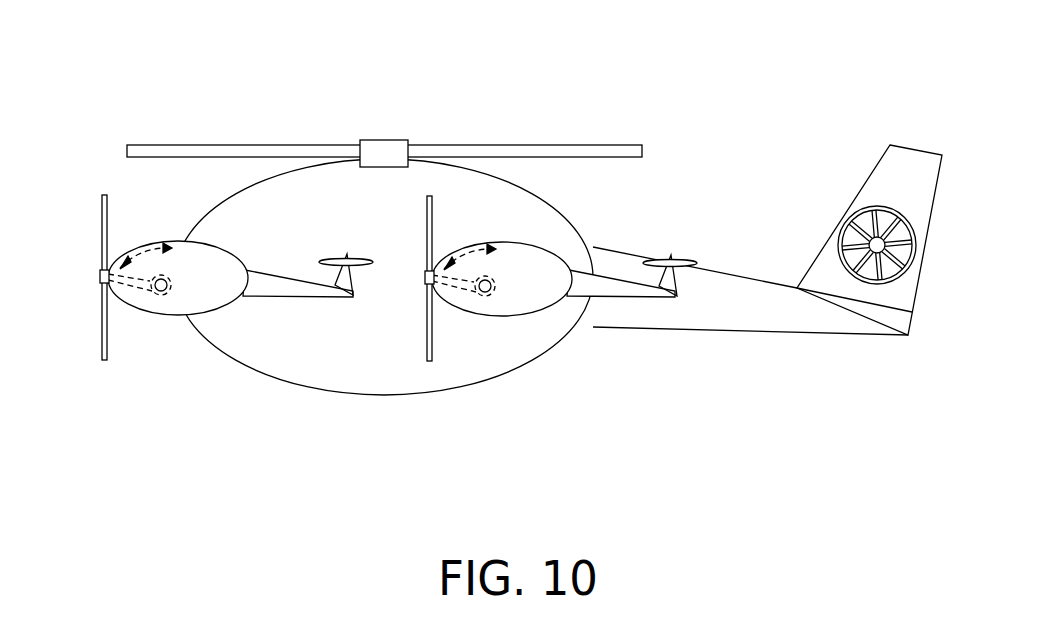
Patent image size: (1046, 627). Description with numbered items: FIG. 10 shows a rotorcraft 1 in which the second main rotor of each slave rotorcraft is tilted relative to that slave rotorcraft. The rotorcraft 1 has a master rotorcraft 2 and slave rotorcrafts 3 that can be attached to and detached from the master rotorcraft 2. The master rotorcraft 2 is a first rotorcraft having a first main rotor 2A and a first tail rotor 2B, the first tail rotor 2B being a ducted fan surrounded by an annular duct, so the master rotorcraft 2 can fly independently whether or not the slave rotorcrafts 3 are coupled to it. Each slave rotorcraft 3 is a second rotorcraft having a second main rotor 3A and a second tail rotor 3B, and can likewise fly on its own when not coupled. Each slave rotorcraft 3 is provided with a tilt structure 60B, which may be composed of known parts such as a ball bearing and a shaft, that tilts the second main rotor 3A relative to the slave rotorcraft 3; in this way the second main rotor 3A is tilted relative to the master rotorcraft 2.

The rotorcraft 1 is at (564, 106).
The master rotorcraft 2 is at (584, 227).
The first main rotor 2A is at (303, 143).
The first tail rotor 2B is at (840, 233).
The slave rotorcraft 3 is at (214, 295).
The second main rotor 3A is at (101, 231).
The second tail rotor 3B is at (337, 257).
The tilt structure 60B is at (161, 296).